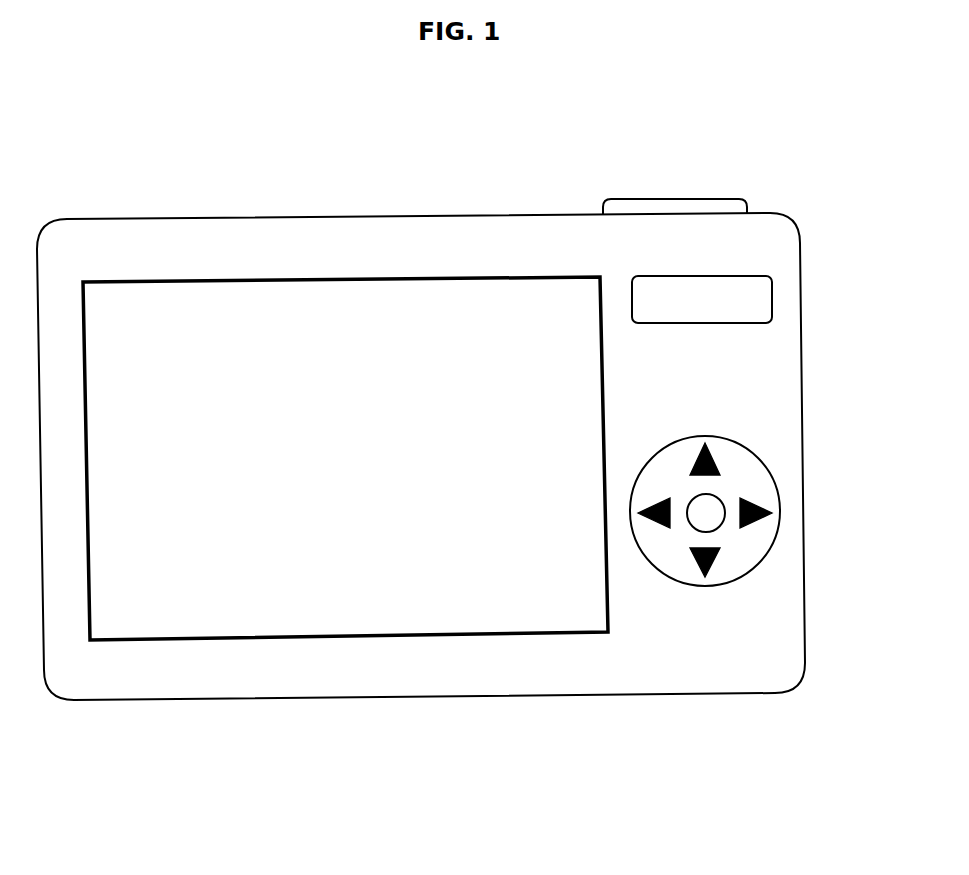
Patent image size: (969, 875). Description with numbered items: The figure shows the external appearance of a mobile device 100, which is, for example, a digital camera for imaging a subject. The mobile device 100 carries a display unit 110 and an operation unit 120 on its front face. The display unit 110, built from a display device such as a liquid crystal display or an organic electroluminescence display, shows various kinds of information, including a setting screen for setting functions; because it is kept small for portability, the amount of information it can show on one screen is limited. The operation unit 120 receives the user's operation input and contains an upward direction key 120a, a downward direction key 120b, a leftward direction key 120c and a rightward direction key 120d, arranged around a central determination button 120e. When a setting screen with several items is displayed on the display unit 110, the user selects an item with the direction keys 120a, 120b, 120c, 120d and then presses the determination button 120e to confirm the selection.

The mobile device 100 is at (362, 157).
The display unit 110 is at (457, 277).
The operation unit 120 is at (775, 478).
The upward direction key 120a is at (703, 455).
The downward direction key 120b is at (712, 568).
The leftward direction key 120c is at (662, 523).
The rightward direction key 120d is at (765, 510).
The determination button 120e is at (708, 517).